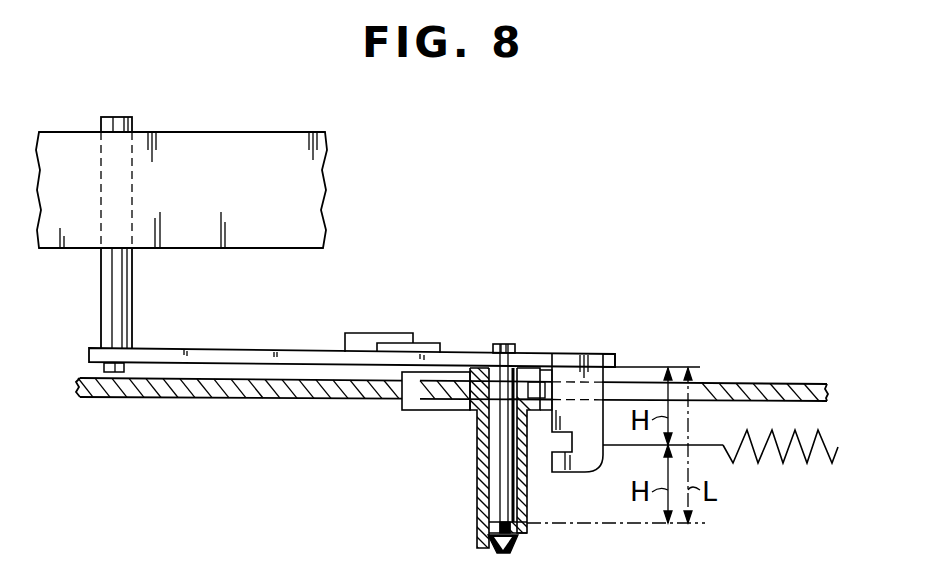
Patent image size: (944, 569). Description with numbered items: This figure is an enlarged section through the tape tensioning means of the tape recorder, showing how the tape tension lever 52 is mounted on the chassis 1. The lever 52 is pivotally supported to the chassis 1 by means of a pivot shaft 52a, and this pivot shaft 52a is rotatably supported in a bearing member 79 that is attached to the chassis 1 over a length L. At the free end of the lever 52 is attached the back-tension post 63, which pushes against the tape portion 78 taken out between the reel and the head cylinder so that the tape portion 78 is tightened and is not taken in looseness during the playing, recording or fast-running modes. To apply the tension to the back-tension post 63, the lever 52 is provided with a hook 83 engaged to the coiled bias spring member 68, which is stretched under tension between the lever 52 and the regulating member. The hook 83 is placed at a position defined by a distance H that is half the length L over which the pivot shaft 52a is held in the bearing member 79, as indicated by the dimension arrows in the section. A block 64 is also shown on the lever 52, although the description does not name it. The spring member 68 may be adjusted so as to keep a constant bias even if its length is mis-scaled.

The chassis 1 is at (232, 392).
The tape portion 78 is at (249, 148).
The back-tension post 63 is at (133, 275).
The tape tension lever 52 is at (245, 355).
The stopper block 64 is at (372, 333).
The pivot 52a is at (495, 470).
The bearing member 79 is at (480, 518).
The hook 83 is at (563, 473).
The coiled bias spring member 68 is at (761, 456).